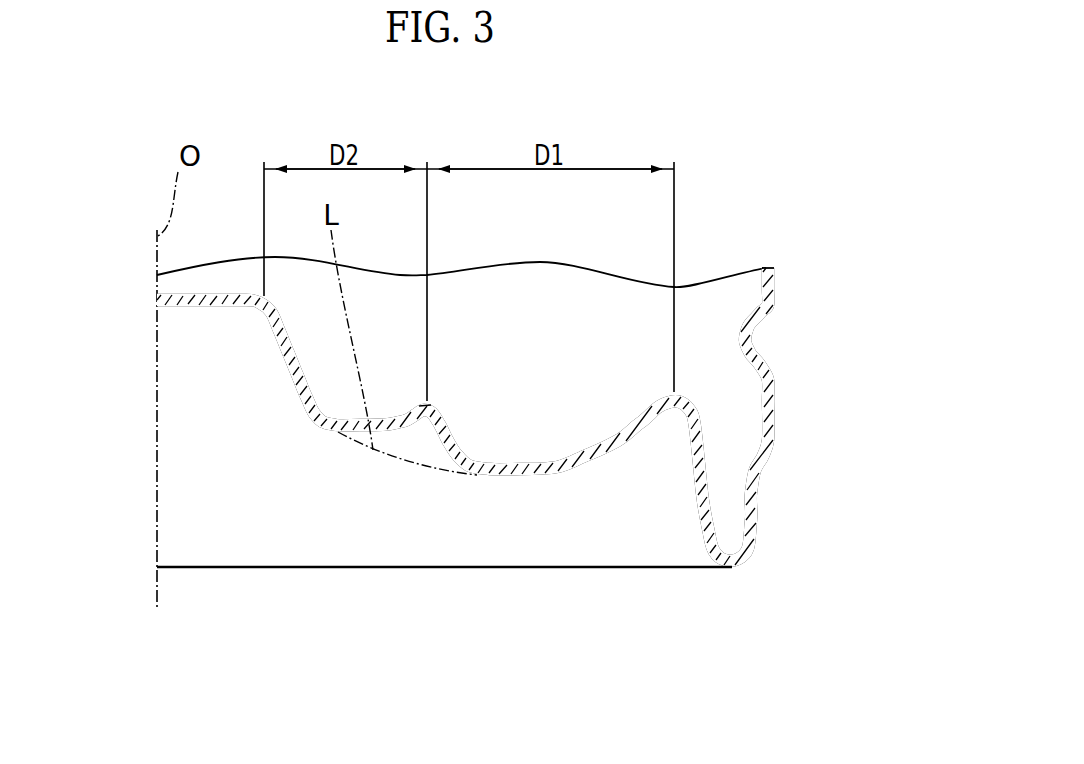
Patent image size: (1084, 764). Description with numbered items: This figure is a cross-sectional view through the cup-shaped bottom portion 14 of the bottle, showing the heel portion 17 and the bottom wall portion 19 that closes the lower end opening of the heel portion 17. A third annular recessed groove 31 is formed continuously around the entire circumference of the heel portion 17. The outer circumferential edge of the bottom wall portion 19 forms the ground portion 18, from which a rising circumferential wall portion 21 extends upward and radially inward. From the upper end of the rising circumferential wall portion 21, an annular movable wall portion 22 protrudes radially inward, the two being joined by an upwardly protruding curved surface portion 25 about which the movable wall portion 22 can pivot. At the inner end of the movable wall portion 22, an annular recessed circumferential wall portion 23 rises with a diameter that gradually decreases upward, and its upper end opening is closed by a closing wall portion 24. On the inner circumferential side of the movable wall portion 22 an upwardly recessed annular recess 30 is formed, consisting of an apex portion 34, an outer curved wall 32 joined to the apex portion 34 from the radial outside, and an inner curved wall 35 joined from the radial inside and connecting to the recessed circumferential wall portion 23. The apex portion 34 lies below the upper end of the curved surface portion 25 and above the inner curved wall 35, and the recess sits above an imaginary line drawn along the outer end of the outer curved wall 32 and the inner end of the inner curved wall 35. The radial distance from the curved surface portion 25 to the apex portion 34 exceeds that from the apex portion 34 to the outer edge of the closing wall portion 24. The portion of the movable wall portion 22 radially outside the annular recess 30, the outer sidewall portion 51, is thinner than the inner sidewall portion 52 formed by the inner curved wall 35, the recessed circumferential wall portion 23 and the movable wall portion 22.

The bottom portion 14 is at (780, 270).
The heel portion 17 is at (778, 393).
The ground portion 18 is at (728, 573).
The bottom wall portion 19 is at (212, 572).
The rising circumferential wall portion 21 is at (696, 500).
The movable wall portion 22 is at (495, 479).
The recessed circumferential wall portion 23 is at (283, 348).
The closing wall portion 24 is at (207, 306).
The curved surface portion 25 is at (681, 396).
The annular recess 30 is at (421, 427).
The third annular recessed groove 31 is at (748, 342).
The outer curved wall 32 is at (447, 434).
The apex portion 34 is at (430, 405).
The inner curved wall 35 is at (393, 419).
The outer sidewall portion 51 is at (557, 478).
The inner sidewall portion 52 is at (290, 380).